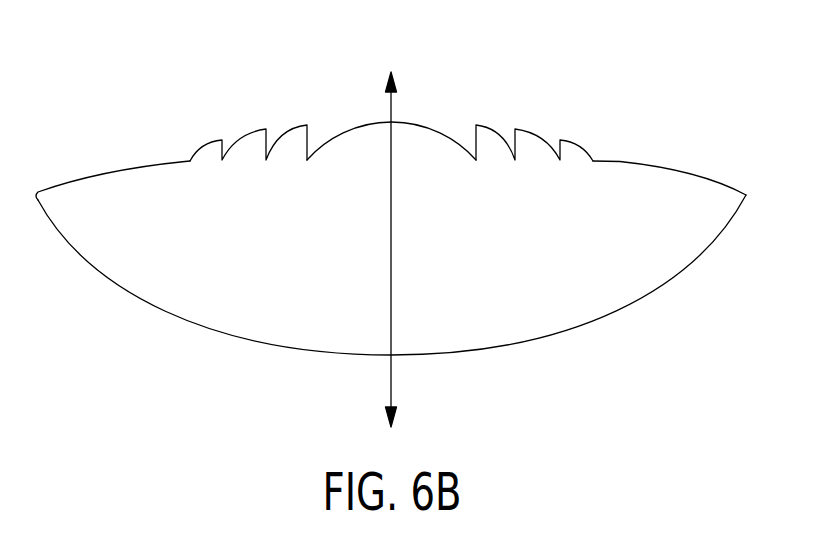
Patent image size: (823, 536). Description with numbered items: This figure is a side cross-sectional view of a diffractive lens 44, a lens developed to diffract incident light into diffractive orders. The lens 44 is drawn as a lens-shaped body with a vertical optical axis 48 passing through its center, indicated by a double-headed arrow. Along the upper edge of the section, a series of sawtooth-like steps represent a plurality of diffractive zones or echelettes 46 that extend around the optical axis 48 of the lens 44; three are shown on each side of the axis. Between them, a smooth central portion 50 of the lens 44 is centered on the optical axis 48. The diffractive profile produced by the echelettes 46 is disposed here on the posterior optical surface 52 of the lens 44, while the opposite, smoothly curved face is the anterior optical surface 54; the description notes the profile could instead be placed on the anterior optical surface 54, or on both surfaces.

The diffractive lens 44 is at (693, 115).
The echelettes 46 is at (236, 96).
The optical axis 48 is at (392, 110).
The central portion 50 is at (333, 79).
The posterior optical surface 52 is at (63, 145).
The anterior optical surface 54 is at (63, 293).